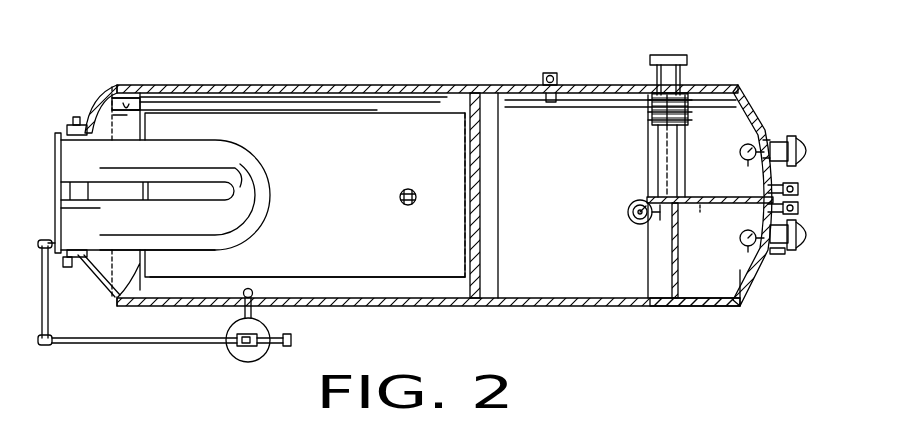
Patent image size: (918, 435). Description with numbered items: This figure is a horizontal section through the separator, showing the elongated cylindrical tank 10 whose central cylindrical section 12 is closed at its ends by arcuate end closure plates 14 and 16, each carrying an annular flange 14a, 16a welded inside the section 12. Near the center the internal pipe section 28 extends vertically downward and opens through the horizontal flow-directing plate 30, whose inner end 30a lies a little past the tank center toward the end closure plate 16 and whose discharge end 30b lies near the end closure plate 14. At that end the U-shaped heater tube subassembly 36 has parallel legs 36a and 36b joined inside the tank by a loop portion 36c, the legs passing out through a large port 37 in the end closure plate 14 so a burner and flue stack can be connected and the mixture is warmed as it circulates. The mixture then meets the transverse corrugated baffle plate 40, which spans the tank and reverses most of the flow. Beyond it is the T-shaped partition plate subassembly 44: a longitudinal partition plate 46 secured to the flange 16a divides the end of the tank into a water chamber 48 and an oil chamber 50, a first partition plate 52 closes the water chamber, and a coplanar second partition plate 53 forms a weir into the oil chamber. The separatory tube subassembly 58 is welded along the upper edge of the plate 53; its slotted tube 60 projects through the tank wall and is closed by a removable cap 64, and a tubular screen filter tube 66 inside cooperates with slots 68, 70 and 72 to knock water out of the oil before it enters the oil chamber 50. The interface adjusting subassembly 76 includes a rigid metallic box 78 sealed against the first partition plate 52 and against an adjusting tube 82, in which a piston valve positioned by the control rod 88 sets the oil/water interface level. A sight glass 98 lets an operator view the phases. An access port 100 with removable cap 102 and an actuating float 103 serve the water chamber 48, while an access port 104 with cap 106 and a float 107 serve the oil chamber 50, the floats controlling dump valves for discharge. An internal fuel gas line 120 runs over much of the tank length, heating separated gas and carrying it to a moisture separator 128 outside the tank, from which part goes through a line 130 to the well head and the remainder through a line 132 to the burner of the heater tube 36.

The tank 10 is at (435, 180).
The central cylindrical section 12 is at (590, 305).
The end closure plate 14 is at (92, 278).
The annular flange 14a is at (123, 84).
The end closure plate 16 is at (757, 135).
The annular flange 16a is at (700, 296).
The internal pipe section 28 is at (408, 188).
The flow-directing plate 30 is at (312, 195).
The inner end 30a is at (440, 245).
The discharge end 30b is at (110, 300).
The U-shaped heater tube subassembly 36 is at (199, 196).
The leg 36a is at (170, 250).
The leg 36b is at (175, 150).
The web or loop portion 36c is at (262, 188).
The port 37 is at (82, 246).
The corrugated baffle plate 40 is at (502, 158).
The T-shaped partition plate subassembly 44 is at (655, 240).
The partition plate 46 is at (712, 206).
The water chamber 48 is at (725, 278).
The oil chamber 50 is at (742, 142).
The first partition plate 52 is at (670, 268).
The second partition plate 53 is at (695, 221).
The separatory tube subassembly 58 is at (683, 98).
The slotted tube 60 is at (661, 70).
The removable cap 64 is at (678, 54).
The screen filter tube 66 is at (682, 90).
The slot 68 is at (652, 110).
The slot 70 is at (660, 150).
The slot 72 is at (685, 118).
The interface adjusting subassembly 76 is at (627, 212).
The rigid metallic box 78 is at (662, 217).
The adjusting tube 82 is at (628, 218).
The control rod 88 is at (632, 203).
The sight glass 98 is at (545, 72).
The access port 100 is at (775, 254).
The removable cap 102 is at (800, 238).
The actuating float 103 is at (742, 248).
The access port 104 is at (778, 158).
The removable cap 106 is at (800, 146).
The float 107 is at (746, 167).
The internal fuel gas line 120 is at (262, 307).
The moisture separator 128 is at (243, 362).
The line 130 is at (283, 350).
The line 132 is at (140, 345).